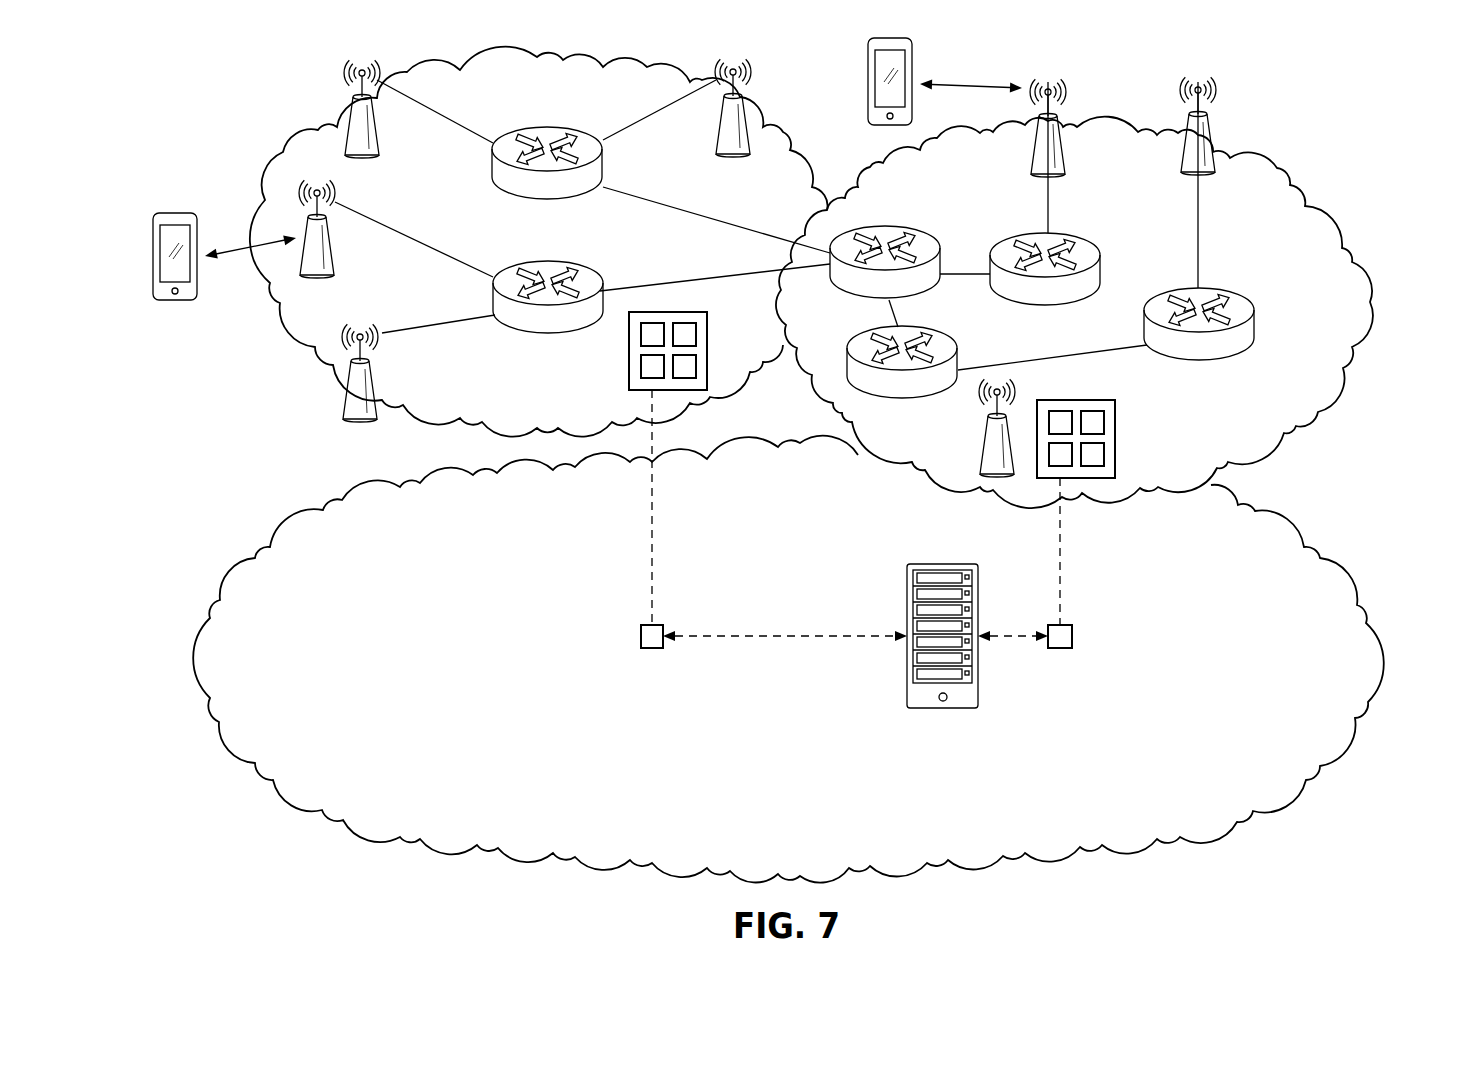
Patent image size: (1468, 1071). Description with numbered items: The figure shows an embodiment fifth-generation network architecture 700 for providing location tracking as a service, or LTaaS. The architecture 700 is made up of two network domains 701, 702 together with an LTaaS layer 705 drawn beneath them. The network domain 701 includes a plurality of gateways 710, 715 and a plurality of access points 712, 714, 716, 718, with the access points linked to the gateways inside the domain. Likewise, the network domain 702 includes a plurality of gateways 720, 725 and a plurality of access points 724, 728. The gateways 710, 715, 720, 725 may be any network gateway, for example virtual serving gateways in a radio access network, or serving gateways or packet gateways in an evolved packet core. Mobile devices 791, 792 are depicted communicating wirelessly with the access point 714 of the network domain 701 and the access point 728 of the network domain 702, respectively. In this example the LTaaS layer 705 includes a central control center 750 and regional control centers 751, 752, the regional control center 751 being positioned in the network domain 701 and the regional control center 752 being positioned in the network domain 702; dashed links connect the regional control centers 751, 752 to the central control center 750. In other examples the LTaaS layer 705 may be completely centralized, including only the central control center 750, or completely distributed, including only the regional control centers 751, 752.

The 5G network architecture 700 is at (1322, 111).
The network domain 701 is at (284, 155).
The network domain 702 is at (1384, 300).
The LTaaS layer 705 is at (448, 709).
The gateway 710 is at (545, 261).
The access point 712 is at (345, 400).
The access point 714 is at (336, 248).
The gateway 715 is at (540, 127).
The access point 716 is at (380, 128).
The access point 718 is at (728, 158).
The gateway 720 is at (1210, 362).
The access point 724 is at (1215, 136).
The gateway 725 is at (1101, 270).
The access point 728 is at (1065, 150).
The central control center 750 is at (946, 712).
The regional control center 751 is at (708, 340).
The regional control center 752 is at (1116, 438).
The mobile device 791 is at (150, 252).
The mobile device 792 is at (866, 78).